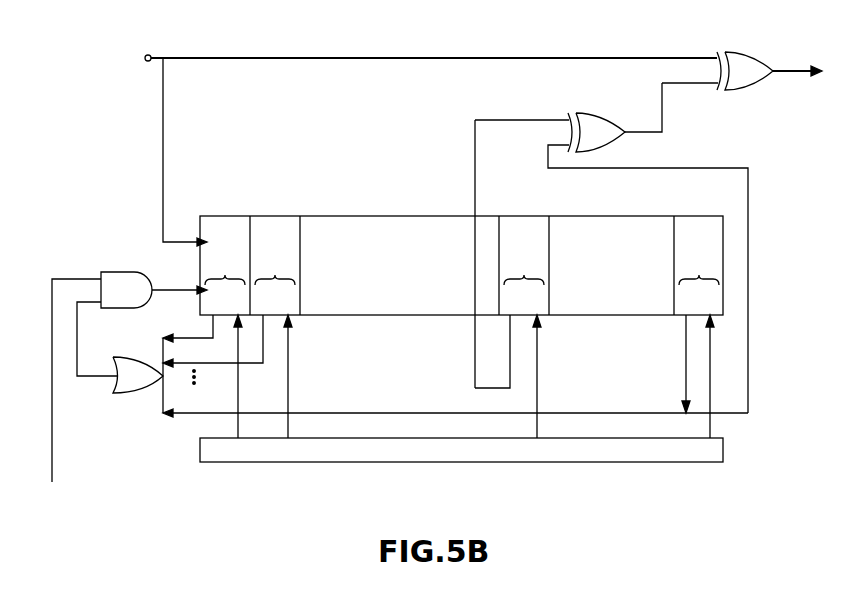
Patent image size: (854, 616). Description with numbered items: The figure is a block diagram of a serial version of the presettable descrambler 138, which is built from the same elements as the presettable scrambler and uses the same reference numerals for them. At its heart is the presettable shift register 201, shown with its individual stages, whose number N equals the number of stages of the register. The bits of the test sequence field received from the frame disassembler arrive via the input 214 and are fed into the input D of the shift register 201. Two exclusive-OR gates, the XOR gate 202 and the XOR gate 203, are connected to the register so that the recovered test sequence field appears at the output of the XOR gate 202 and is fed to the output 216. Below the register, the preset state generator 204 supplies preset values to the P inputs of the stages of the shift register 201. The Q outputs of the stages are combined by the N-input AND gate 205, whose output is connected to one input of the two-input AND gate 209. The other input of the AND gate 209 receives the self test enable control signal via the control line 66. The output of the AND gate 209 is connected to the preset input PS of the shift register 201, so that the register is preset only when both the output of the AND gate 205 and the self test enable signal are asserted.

The presettable descrambler 138 is at (333, 110).
The input 214 is at (150, 55).
The shift register 201 is at (358, 216).
The exclusive-OR gate 202 is at (735, 52).
The exclusive-OR gate 203 is at (600, 112).
The output 216 is at (815, 78).
The preset state generator 204 is at (724, 450).
The 2-input AND gate 209 is at (121, 272).
The control line 66 is at (52, 278).
The N-input AND gate 205 is at (120, 394).